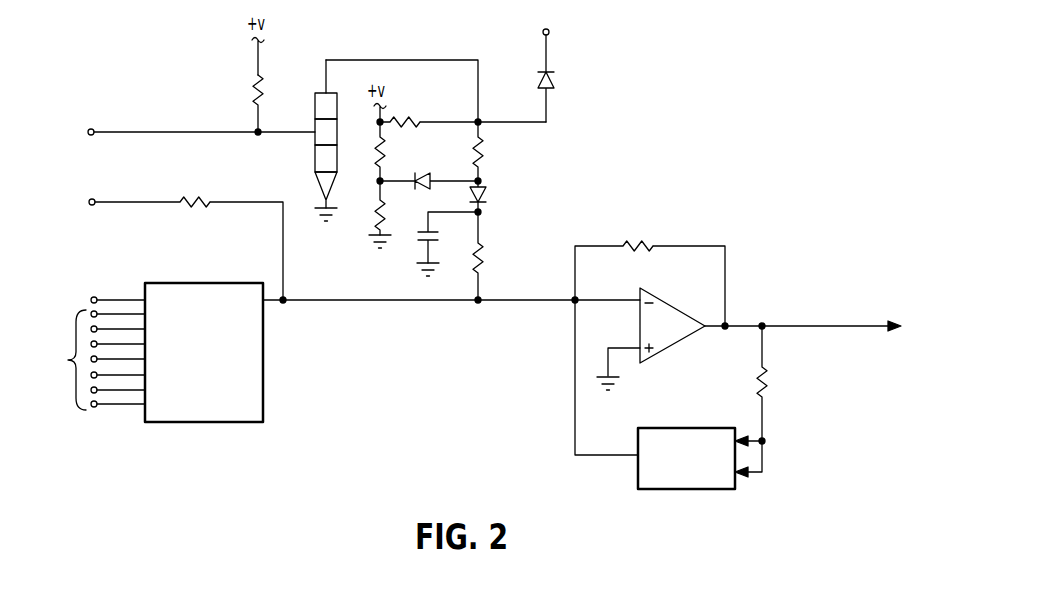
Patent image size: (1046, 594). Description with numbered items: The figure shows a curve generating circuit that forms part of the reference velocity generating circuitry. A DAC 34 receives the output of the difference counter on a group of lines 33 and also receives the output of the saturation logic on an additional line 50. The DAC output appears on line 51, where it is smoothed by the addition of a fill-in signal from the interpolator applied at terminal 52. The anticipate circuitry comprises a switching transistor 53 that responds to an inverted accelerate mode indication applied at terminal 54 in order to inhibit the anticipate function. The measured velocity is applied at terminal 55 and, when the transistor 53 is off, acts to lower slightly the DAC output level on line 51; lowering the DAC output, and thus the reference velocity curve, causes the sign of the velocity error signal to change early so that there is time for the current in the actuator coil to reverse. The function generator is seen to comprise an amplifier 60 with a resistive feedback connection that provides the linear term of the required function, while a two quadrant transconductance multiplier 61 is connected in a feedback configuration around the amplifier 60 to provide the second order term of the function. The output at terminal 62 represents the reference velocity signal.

The lines 33 is at (91, 360).
The DAC 34 is at (197, 422).
The additional line 50 is at (91, 297).
The line 51 is at (307, 301).
The terminal 52 is at (89, 202).
The switching transistor 53 is at (315, 156).
The terminal 54 is at (88, 132).
The terminal 55 is at (550, 31).
The amplifier 60 is at (665, 345).
The two quadrant transconductance multiplier 61 is at (667, 489).
The terminal 62 is at (889, 326).